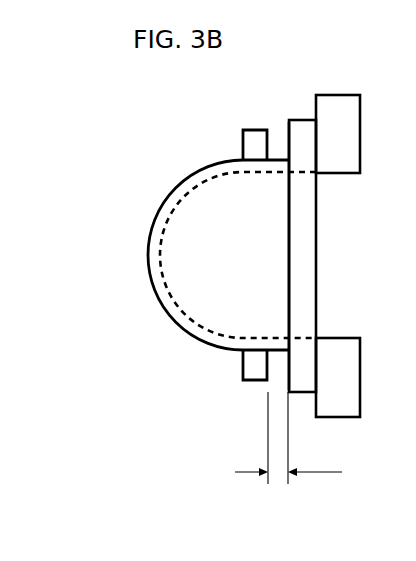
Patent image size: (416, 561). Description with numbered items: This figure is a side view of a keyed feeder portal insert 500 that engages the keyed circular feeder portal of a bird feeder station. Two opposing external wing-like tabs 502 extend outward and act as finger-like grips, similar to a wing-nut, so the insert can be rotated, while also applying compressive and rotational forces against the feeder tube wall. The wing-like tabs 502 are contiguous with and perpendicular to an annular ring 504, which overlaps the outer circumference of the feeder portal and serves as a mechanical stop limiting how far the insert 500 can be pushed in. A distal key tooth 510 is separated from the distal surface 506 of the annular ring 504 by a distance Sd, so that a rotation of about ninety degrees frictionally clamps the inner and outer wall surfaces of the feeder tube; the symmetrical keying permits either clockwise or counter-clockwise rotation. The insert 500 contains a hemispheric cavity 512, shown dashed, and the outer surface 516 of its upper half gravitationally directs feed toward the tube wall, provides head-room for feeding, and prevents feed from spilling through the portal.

The keyed feeder portal insert 500 is at (146, 99).
The wing-like tabs 502 is at (342, 94).
The annular ring 504 is at (302, 119).
The distal surface 506 is at (288, 121).
The distal key tooth 510 is at (243, 135).
The hemispheric cavity 512 is at (183, 306).
The outer surface 516 is at (149, 252).